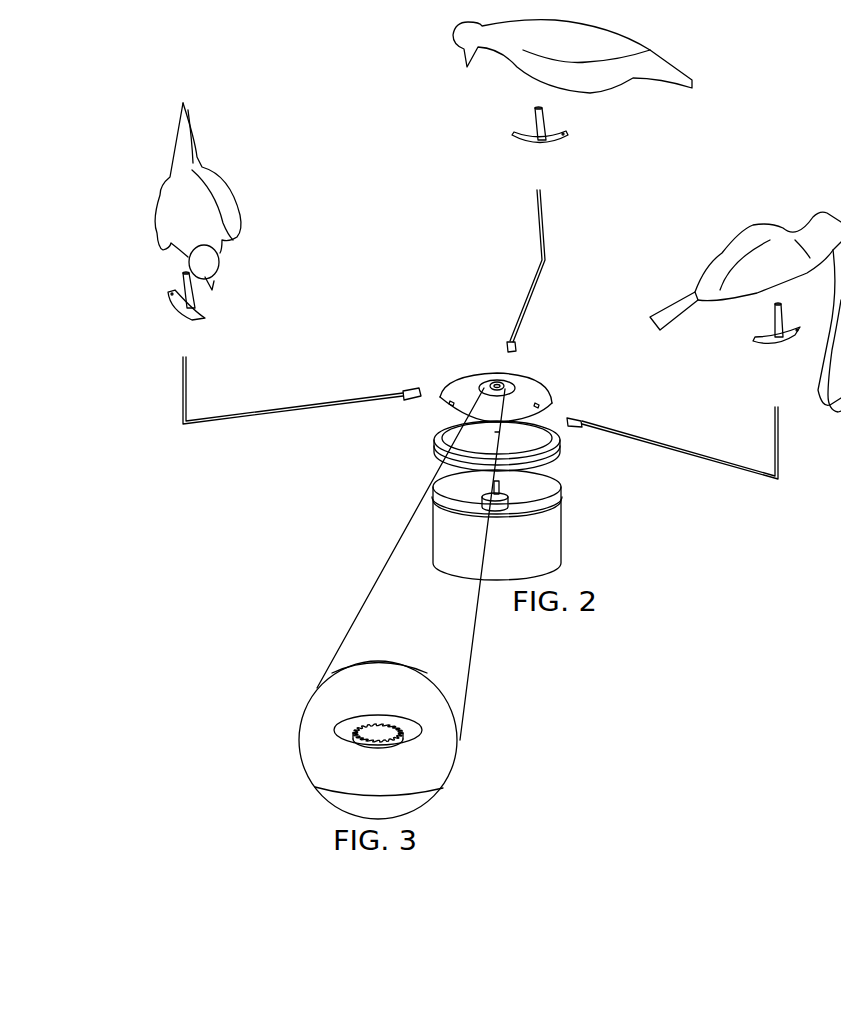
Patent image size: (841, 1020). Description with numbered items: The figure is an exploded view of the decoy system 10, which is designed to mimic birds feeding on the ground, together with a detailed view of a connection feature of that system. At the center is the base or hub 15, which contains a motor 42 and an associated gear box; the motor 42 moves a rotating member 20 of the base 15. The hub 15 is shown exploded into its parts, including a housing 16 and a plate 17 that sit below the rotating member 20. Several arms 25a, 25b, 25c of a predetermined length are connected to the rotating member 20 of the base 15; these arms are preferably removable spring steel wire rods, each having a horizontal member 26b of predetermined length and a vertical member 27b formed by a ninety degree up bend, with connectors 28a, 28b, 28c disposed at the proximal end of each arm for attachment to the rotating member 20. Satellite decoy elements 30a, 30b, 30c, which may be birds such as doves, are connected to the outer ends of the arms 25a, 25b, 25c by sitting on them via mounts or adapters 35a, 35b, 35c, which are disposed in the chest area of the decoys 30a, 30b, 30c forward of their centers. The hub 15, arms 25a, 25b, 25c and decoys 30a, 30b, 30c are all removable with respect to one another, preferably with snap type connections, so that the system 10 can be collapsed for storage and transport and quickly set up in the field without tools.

The decoy system 10 is at (387, 182).
The central base or hub 15 is at (389, 528).
The housing body 16 is at (537, 555).
The cover plate 17 is at (533, 449).
The rotating member 20 is at (516, 382).
The arm 25a is at (551, 230).
The arm 25b is at (281, 406).
The arm 25c is at (698, 461).
The horizontal member 26b is at (311, 414).
The vertical member 27b is at (181, 391).
The connector 28a is at (519, 345).
The connector 28b is at (413, 382).
The connector 28c is at (574, 433).
The satellite decoy element 30a is at (517, 63).
The satellite decoy element 30b is at (212, 197).
The satellite decoy element 30c is at (722, 299).
The mount or adapter 35a is at (575, 142).
The mount or adapter 35b is at (209, 318).
The mount or adapter 35c is at (757, 351).
The motor 42 is at (480, 507).